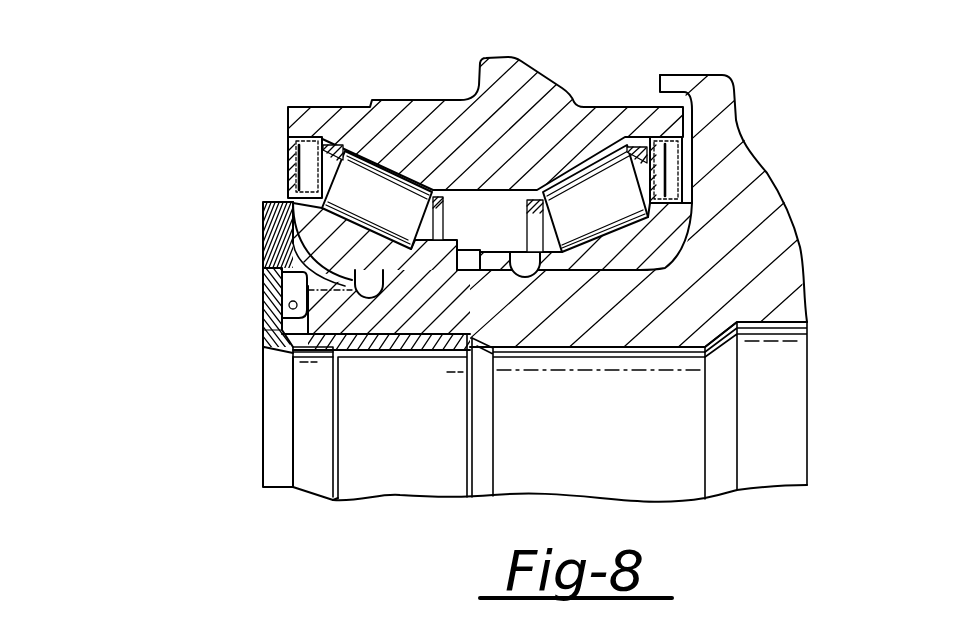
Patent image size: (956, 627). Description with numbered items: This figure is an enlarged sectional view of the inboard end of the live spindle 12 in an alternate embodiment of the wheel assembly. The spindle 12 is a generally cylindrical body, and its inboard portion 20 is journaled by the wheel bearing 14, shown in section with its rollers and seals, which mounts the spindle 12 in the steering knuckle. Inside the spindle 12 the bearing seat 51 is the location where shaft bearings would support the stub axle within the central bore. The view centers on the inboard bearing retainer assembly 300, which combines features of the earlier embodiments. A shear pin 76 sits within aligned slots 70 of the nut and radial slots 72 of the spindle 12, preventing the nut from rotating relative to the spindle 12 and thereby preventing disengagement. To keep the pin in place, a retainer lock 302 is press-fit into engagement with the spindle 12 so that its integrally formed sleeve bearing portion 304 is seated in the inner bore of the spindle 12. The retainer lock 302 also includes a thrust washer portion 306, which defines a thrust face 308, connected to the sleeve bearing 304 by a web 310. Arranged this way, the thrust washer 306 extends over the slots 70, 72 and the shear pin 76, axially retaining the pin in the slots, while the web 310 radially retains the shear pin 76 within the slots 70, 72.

The live spindle 12 is at (779, 168).
The wheel bearing 14 is at (356, 100).
The inboard portion 20 is at (583, 321).
The bearing seat 51 is at (466, 268).
The slots 70 is at (278, 262).
The radial slots 72 is at (310, 330).
The shear pin 76 is at (289, 280).
The inboard bearing retainer assembly 300 is at (192, 276).
The retainer lock 302 is at (262, 408).
The sleeve bearing portion 304 is at (399, 352).
The thrust washer portion 306 is at (262, 290).
The thrust face 308 is at (263, 462).
The web 310 is at (288, 324).